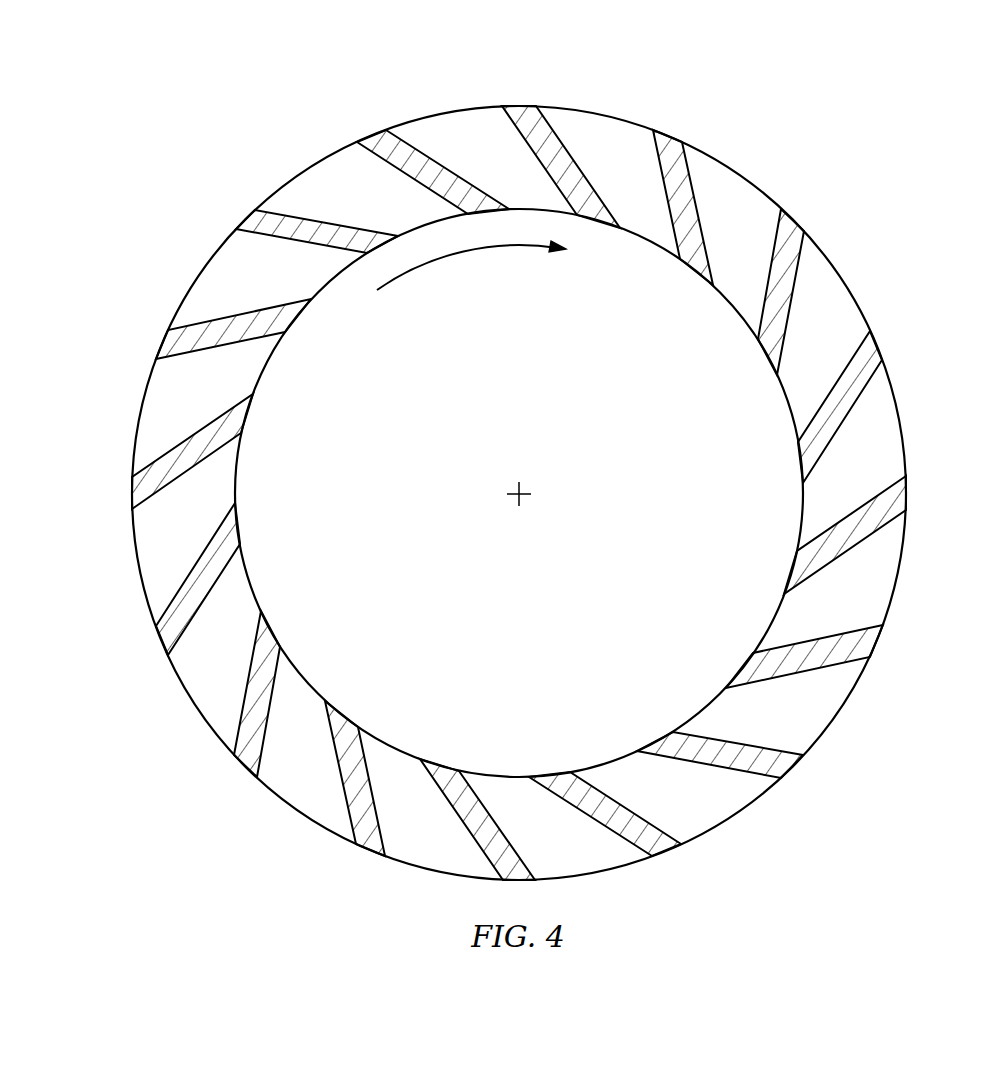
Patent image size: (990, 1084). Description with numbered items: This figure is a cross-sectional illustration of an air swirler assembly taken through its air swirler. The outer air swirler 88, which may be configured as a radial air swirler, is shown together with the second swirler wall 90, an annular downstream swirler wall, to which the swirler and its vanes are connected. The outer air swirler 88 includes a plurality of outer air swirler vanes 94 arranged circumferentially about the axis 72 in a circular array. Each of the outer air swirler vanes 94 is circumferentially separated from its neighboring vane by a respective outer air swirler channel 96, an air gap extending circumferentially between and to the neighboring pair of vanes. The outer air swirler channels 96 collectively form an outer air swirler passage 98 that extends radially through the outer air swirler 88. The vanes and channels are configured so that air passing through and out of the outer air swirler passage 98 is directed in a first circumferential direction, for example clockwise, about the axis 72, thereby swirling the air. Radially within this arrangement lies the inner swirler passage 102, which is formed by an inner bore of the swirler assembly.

The axis 72 is at (525, 490).
The outer air swirler 88 is at (908, 206).
The second swirler wall 90 is at (197, 710).
The outer air swirler vanes 94 is at (363, 142).
The outer air swirler channels 96 is at (213, 272).
The outer air swirler passage 98 is at (480, 126).
The inner swirler passage 102 is at (527, 651).